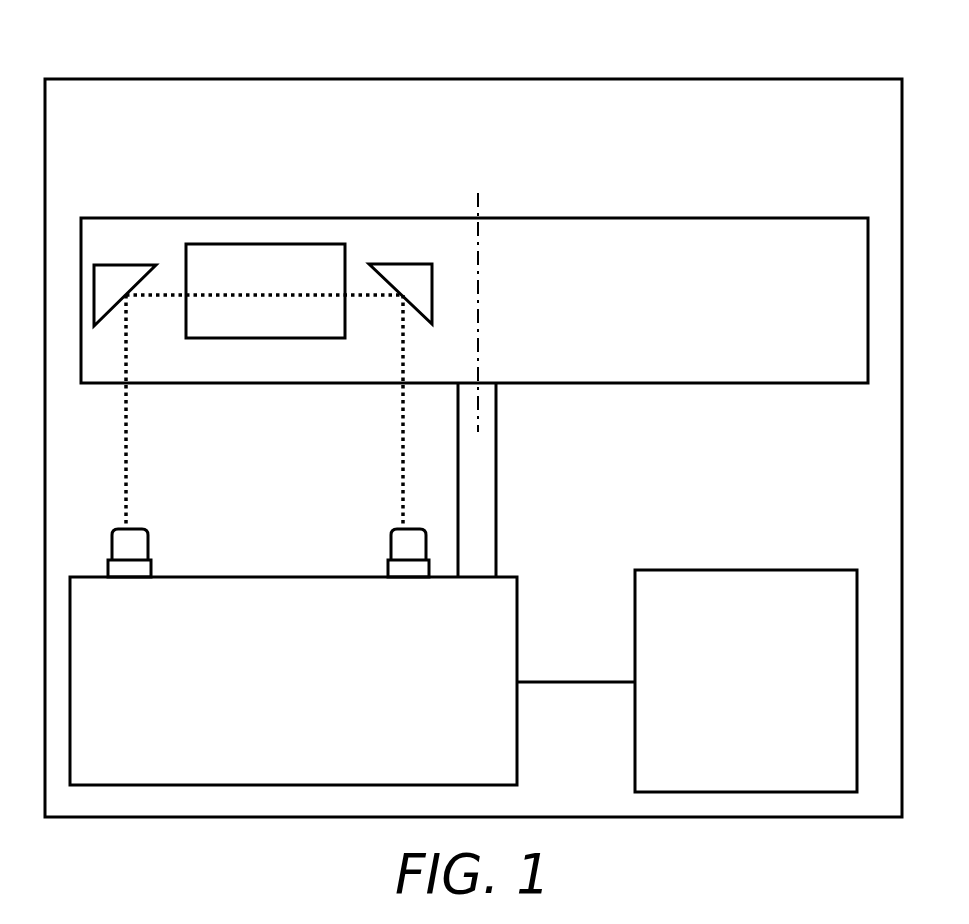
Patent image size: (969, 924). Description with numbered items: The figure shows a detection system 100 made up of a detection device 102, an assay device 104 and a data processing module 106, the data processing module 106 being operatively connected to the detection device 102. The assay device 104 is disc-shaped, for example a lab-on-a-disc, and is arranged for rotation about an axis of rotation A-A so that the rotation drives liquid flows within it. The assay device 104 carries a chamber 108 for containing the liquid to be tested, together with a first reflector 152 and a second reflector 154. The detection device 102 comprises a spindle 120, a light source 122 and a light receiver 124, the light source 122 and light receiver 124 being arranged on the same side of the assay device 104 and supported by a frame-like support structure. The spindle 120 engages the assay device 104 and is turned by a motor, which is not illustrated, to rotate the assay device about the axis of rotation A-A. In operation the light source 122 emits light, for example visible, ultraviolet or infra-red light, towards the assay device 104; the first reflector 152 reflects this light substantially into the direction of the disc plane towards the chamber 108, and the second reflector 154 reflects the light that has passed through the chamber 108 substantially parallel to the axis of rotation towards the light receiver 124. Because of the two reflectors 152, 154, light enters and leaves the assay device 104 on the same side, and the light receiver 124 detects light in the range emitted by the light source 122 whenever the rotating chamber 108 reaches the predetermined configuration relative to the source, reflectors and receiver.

The detection system 100 is at (221, 79).
The detection device 102 is at (518, 627).
The assay device 104 is at (713, 385).
The data processing module 106 is at (773, 570).
The chamber 108 is at (218, 245).
The spindle 120 is at (497, 421).
The light source 122 is at (138, 570).
The light receiver 124 is at (404, 570).
The first reflector 152 is at (137, 276).
The second reflector 154 is at (422, 323).